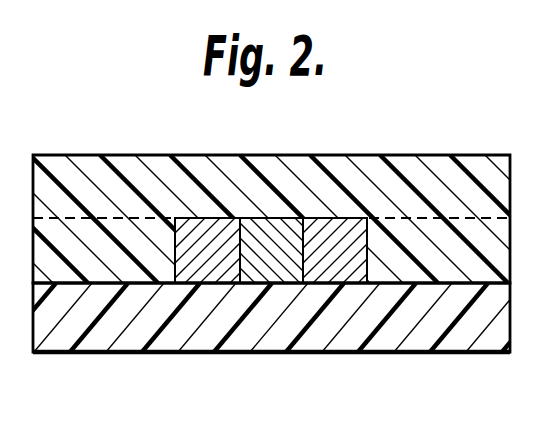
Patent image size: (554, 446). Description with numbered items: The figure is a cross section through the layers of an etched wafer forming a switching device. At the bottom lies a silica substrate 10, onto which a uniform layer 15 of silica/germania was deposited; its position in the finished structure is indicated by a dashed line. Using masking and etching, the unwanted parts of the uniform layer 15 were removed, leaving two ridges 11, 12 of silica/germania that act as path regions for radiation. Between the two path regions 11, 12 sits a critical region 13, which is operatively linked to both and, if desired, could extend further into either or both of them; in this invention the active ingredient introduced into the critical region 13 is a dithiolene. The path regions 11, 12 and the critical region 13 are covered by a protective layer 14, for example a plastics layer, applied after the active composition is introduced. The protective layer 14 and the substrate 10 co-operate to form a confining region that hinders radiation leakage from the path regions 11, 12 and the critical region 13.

The silica substrate 10 is at (397, 325).
The ridge 11 is at (202, 245).
The ridge 12 is at (338, 253).
The critical region 13 is at (262, 250).
The protective layer 14 is at (405, 200).
The uniform layer 15 is at (460, 215).